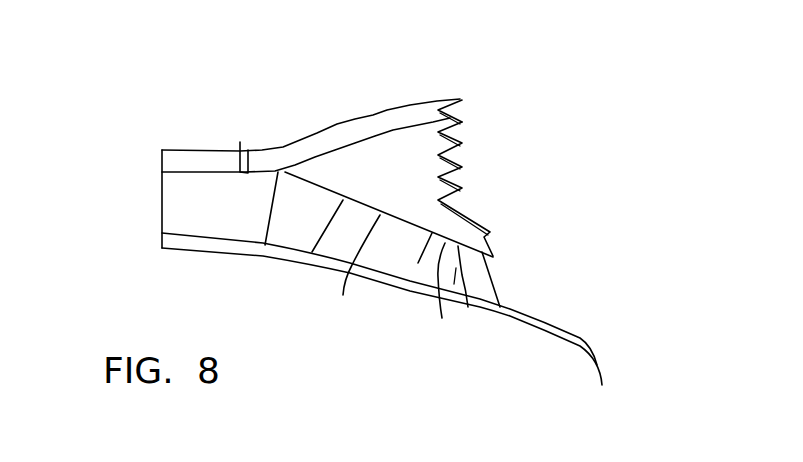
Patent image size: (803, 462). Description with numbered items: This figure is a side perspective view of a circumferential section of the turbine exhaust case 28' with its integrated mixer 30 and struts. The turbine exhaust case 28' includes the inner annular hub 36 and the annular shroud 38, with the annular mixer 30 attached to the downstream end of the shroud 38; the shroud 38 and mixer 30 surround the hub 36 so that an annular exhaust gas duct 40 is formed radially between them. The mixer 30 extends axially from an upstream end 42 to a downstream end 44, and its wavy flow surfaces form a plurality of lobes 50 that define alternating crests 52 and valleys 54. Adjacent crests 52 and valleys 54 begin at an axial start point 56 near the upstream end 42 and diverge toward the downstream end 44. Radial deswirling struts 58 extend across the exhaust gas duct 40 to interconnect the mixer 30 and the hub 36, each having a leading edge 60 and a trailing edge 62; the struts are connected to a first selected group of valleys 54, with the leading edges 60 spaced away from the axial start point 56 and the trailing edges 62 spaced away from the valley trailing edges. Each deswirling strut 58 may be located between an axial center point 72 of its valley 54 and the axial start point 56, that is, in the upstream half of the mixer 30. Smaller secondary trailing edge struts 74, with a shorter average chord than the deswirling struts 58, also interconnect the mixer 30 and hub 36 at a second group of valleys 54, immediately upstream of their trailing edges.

The turbine exhaust case 28' is at (106, 186).
The mixer 30 is at (313, 140).
The annular hub 36 is at (205, 251).
The annular shroud 38 is at (190, 150).
The annular exhaust gas duct 40 is at (468, 307).
The upstream end 42 is at (237, 147).
The downstream end 44 is at (463, 156).
The lobes 50 is at (386, 112).
The crests 52 is at (452, 99).
The valleys 54 is at (442, 318).
The axial start point 56 is at (265, 245).
The deswirling struts 58 is at (312, 252).
The leading edge 60 is at (320, 233).
The trailing edge 62 is at (418, 263).
The axial center point 72 is at (343, 295).
The secondary trailing edge struts 74 is at (485, 282).